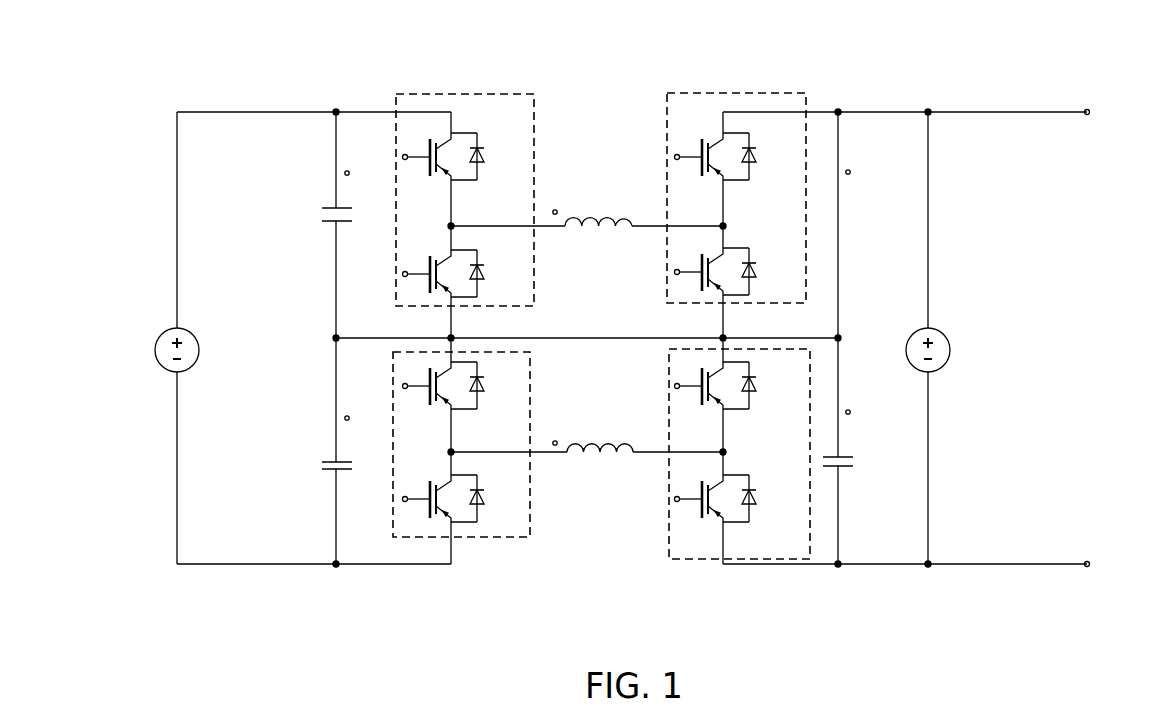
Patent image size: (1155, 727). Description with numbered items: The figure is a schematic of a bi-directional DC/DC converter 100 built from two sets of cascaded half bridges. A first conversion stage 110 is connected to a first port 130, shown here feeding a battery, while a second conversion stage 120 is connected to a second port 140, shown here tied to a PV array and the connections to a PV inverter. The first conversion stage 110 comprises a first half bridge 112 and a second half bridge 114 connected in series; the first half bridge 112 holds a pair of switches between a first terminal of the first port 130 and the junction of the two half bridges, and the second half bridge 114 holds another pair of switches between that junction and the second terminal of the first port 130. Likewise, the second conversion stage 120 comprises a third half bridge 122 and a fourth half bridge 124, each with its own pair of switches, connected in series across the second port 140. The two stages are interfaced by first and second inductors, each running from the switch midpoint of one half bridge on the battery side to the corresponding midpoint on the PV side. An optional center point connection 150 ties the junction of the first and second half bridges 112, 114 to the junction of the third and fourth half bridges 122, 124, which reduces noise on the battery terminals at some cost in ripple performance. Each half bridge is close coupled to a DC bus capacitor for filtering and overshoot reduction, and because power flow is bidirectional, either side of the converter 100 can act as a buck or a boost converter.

The DC/DC converter 100 is at (1128, 42).
The first conversion stage 110 is at (473, 42).
The first half bridge 112 is at (394, 93).
The second half bridge 114 is at (468, 537).
The second conversion stage 120 is at (743, 38).
The third half bridge 122 is at (666, 92).
The fourth half bridge 124 is at (690, 561).
The first port 130 is at (161, 333).
The second port 140 is at (1140, 339).
The center point connection 150 is at (600, 340).